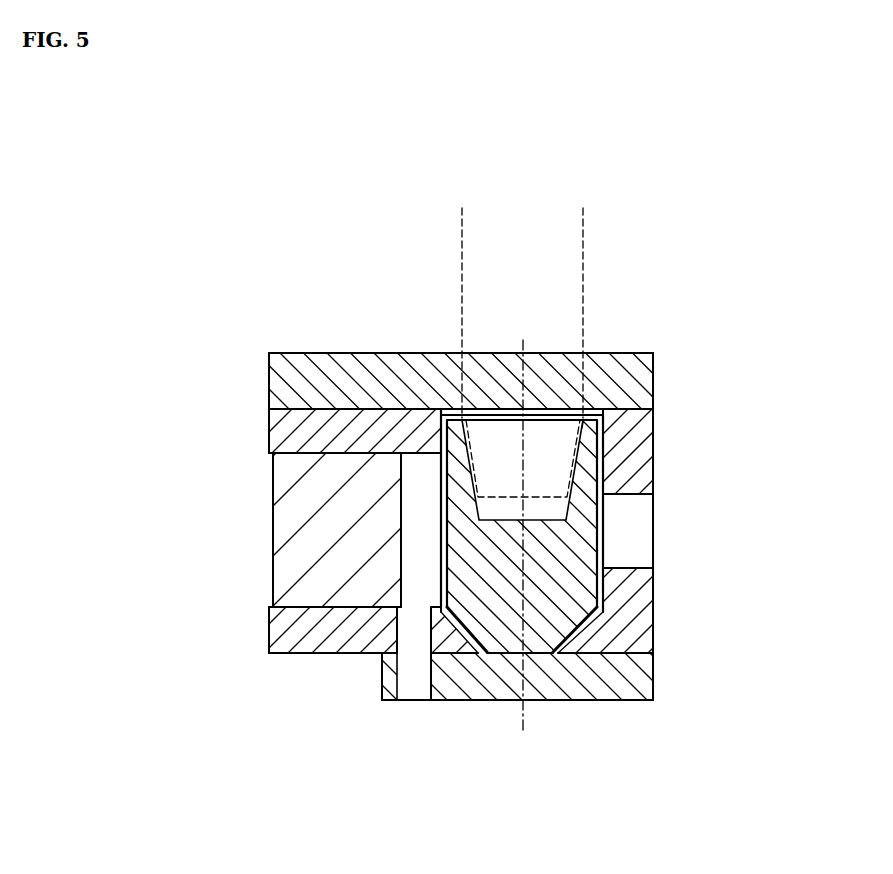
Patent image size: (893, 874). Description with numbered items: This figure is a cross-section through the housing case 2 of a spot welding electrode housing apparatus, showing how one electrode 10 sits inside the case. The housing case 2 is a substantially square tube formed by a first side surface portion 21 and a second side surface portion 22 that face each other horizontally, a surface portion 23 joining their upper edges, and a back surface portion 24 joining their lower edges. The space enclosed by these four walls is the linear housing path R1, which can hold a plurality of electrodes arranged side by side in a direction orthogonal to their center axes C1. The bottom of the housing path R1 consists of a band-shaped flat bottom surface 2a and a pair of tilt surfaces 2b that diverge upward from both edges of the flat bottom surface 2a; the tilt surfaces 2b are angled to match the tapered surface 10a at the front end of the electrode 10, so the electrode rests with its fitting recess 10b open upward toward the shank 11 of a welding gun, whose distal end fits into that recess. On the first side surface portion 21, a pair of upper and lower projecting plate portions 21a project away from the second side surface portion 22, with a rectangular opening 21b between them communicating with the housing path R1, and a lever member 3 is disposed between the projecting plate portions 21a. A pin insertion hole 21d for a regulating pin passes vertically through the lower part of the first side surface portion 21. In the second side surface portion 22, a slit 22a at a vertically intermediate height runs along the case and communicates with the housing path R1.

The housing case 2 is at (660, 362).
The flat bottom surface 2a is at (533, 648).
The tilt surfaces 2b is at (482, 633).
The lever member 3 is at (273, 527).
The spot welding electrode 10 is at (603, 430).
The tapered surface 10a is at (603, 628).
The fitting recess 10b is at (567, 417).
The shank 11 is at (461, 238).
The first side surface portion 21 is at (381, 671).
The projecting plate portions 21a is at (268, 440).
The opening 21b is at (403, 466).
The pin insertion hole 21d is at (400, 630).
The second side surface portion 22 is at (655, 637).
The slit 22a is at (623, 495).
The surface portion 23 is at (407, 354).
The back surface portion 24 is at (622, 700).
The center axis C1 is at (523, 340).
The housing path R1 is at (590, 460).